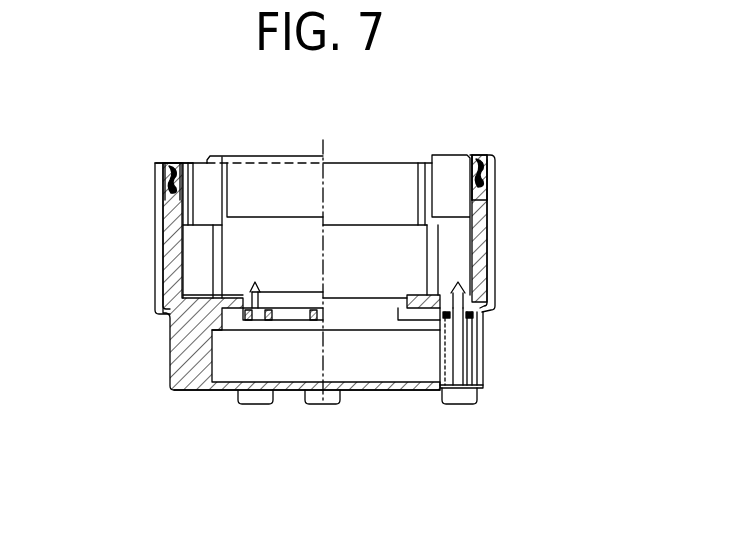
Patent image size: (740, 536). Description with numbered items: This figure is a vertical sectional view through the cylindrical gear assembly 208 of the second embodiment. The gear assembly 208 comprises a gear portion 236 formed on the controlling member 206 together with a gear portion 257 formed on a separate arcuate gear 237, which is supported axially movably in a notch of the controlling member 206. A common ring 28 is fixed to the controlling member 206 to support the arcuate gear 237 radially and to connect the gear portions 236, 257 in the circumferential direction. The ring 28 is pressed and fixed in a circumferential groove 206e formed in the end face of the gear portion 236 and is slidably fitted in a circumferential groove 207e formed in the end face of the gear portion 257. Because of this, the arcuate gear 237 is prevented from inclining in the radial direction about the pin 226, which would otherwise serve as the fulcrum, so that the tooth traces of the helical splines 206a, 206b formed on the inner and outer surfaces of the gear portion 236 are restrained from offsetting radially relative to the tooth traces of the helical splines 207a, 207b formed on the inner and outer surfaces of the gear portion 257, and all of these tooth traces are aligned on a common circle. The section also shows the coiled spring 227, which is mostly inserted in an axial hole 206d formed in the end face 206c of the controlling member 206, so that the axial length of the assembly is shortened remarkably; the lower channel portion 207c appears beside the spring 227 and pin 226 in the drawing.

The controlling member 206 is at (175, 342).
The helical spline 206a is at (185, 163).
The helical spline 206b is at (160, 250).
The end face 206c is at (186, 396).
The axial hole 206d is at (485, 323).
The circumferential groove 206e is at (153, 163).
The helical spline 207a is at (468, 158).
The helical spline 207b is at (492, 230).
The cap lower channel 207c is at (438, 300).
The circumferential groove 207e is at (483, 175).
The cylindrical gear assembly 208 is at (299, 140).
The pin 226 is at (462, 342).
The coiled spring 227 is at (483, 357).
The gear portion 236 is at (175, 207).
The arcuate gear 237 is at (253, 155).
The gear portion 257 is at (478, 207).
The ring 28 is at (175, 162).